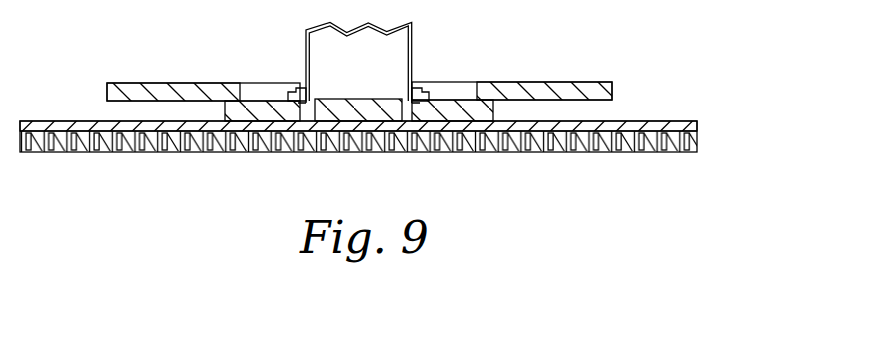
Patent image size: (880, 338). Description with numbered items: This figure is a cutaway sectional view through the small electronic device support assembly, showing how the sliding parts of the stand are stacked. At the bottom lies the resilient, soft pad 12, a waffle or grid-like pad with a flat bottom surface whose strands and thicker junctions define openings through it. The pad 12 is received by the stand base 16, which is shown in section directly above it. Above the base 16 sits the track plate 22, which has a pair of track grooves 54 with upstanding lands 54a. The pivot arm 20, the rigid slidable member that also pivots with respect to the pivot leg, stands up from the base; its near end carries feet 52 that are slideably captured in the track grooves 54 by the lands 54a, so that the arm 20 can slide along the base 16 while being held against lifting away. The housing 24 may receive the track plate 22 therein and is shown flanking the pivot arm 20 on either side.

The pad 12 is at (275, 153).
The stand base 16 is at (85, 121).
The pivot arm 20 is at (373, 72).
The track plate 22 is at (463, 86).
The housing 24 is at (180, 82).
The feet 52 is at (414, 113).
The track grooves 54 is at (302, 88).
The upstanding lands 54a is at (417, 87).